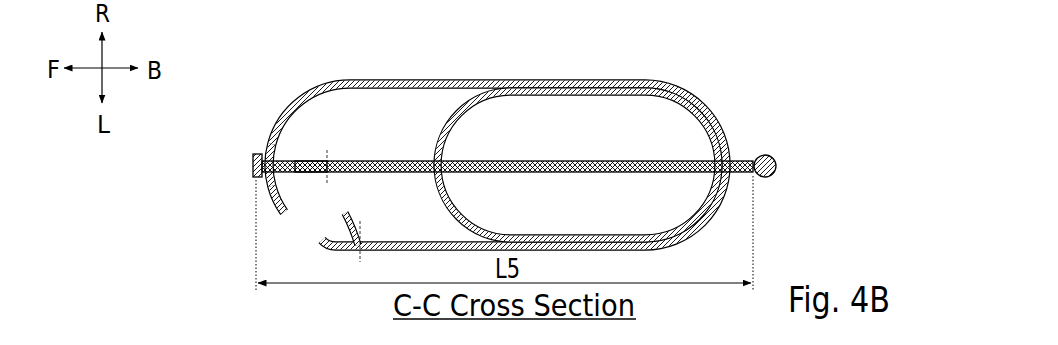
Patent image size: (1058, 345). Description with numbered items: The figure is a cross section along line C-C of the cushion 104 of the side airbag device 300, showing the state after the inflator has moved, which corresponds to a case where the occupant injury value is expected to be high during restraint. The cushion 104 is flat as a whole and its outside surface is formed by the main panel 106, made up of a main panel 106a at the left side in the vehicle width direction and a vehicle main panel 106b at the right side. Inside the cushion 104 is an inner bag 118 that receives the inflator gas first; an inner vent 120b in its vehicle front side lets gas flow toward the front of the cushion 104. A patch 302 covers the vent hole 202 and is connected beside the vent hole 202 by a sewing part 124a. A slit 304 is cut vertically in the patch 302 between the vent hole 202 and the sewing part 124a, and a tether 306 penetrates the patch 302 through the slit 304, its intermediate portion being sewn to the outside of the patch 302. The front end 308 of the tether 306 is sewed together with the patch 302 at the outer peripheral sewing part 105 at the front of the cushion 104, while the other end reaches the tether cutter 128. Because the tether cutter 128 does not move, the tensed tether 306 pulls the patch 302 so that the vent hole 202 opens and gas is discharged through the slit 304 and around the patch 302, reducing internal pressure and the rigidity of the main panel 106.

The side airbag device 300 is at (299, 54).
The cushion 104 is at (303, 98).
The outer peripheral sewing part 105 is at (262, 152).
The front end 308 is at (253, 164).
The patch 302 is at (309, 160).
The inner bag 118 is at (484, 90).
The inner vent 120b is at (445, 154).
The slit 304 is at (346, 210).
The sewing part 124a is at (360, 236).
The tether 306 is at (588, 161).
The main panel 106 is at (606, 135).
The main panel 106a is at (727, 182).
The vehicle main panel 106b is at (697, 99).
The tether cutter 128 is at (778, 167).
The vent hole 202 is at (287, 218).